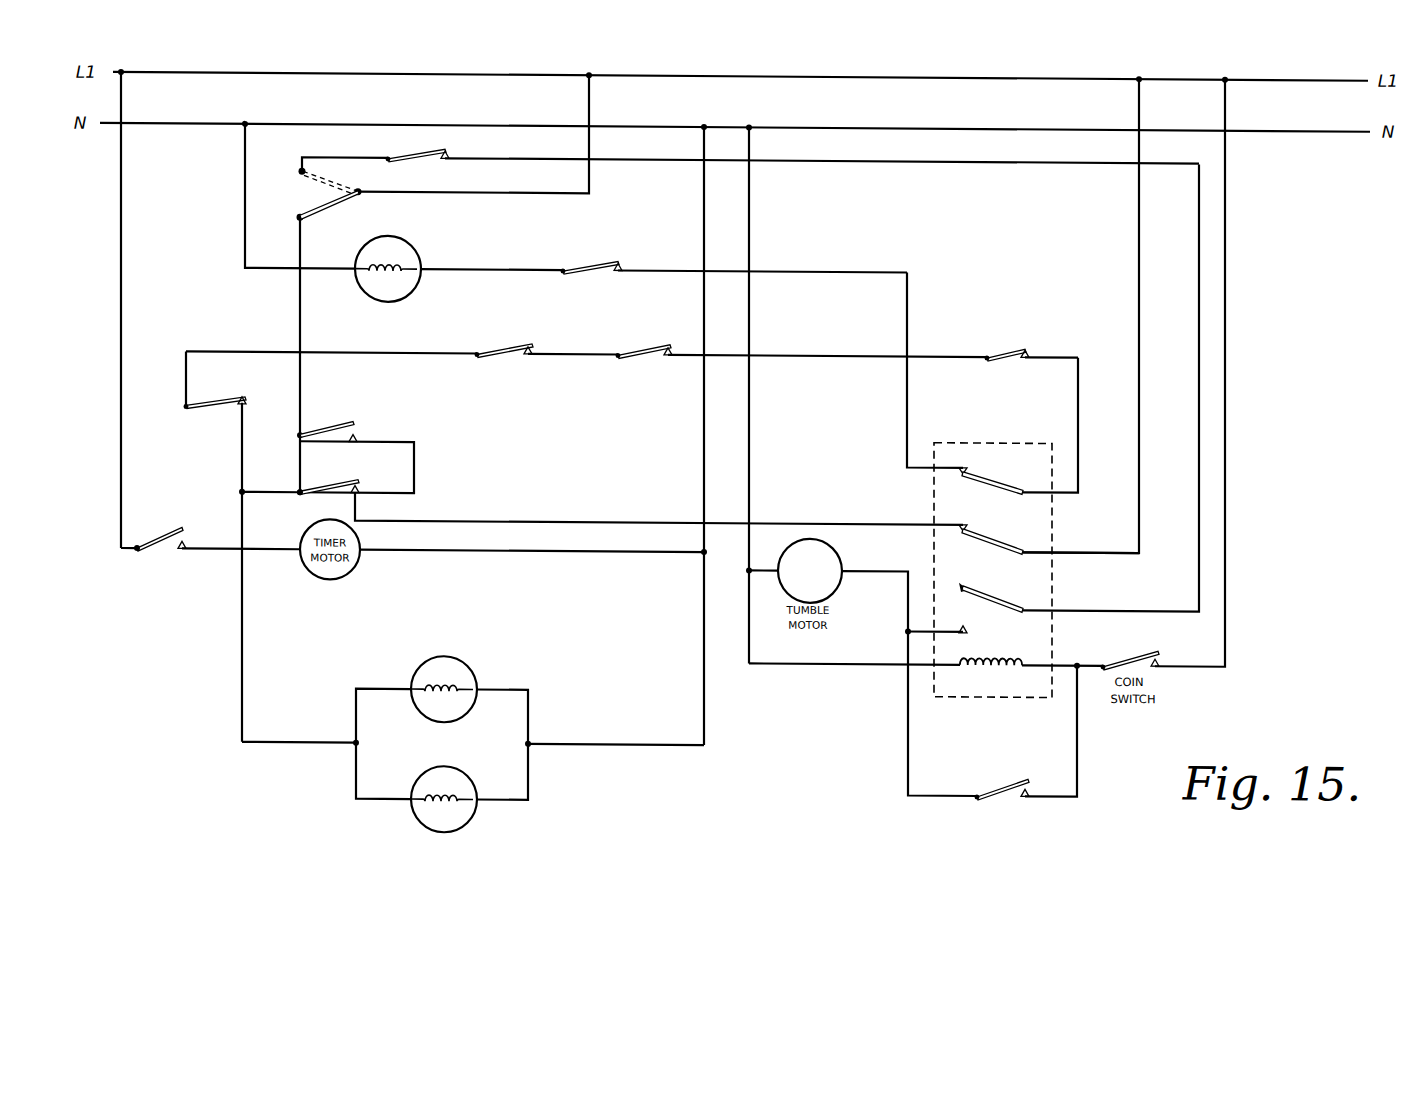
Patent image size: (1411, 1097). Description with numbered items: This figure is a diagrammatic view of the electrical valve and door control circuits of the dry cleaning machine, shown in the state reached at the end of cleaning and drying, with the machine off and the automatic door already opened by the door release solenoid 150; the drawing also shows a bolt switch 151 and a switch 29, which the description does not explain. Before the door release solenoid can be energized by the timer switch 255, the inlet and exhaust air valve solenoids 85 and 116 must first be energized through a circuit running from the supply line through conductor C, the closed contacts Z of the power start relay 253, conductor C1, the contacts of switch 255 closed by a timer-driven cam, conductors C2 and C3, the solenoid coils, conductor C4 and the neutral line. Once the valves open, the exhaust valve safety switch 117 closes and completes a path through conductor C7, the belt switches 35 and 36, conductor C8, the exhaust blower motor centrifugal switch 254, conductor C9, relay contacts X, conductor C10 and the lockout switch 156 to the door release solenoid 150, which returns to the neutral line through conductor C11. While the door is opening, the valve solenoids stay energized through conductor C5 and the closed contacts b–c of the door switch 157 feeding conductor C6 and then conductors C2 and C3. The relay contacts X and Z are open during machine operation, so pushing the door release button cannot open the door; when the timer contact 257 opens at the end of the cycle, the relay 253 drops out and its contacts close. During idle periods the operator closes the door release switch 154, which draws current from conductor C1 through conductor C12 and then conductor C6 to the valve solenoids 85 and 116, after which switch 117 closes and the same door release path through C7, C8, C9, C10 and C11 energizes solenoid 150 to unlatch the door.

The door switch 157 is at (320, 186).
The bolt switch 151 is at (428, 158).
The door release solenoid 150 is at (413, 288).
The lockout switch 156 is at (598, 264).
The belt switch 35 is at (507, 340).
The belt switch 36 is at (650, 339).
The exhaust air valve safety switch 117 is at (215, 399).
The door release switch 154 is at (358, 425).
The timer switch 255 is at (352, 486).
The switch 29 is at (160, 553).
The exhaust air valve solenoid 116 is at (477, 674).
The inlet air valve solenoid 85 is at (470, 820).
The exhaust blower motor centrifugal switch 254 is at (1012, 360).
The power start relay 253 is at (1056, 527).
The timer contact 257 is at (1000, 793).
The conductor C11 is at (245, 191).
The conductor C5 is at (589, 100).
The conductor C6 is at (300, 320).
The conductor C7 is at (377, 349).
The conductor C3 is at (238, 474).
The conductor C2 is at (263, 492).
The conductor C12 is at (415, 468).
The conductor C1 is at (590, 517).
The conductor C4 is at (704, 636).
The conductor C8 is at (803, 350).
The conductor C10 is at (907, 310).
The conductor C9 is at (1078, 410).
The conductor C is at (1140, 331).